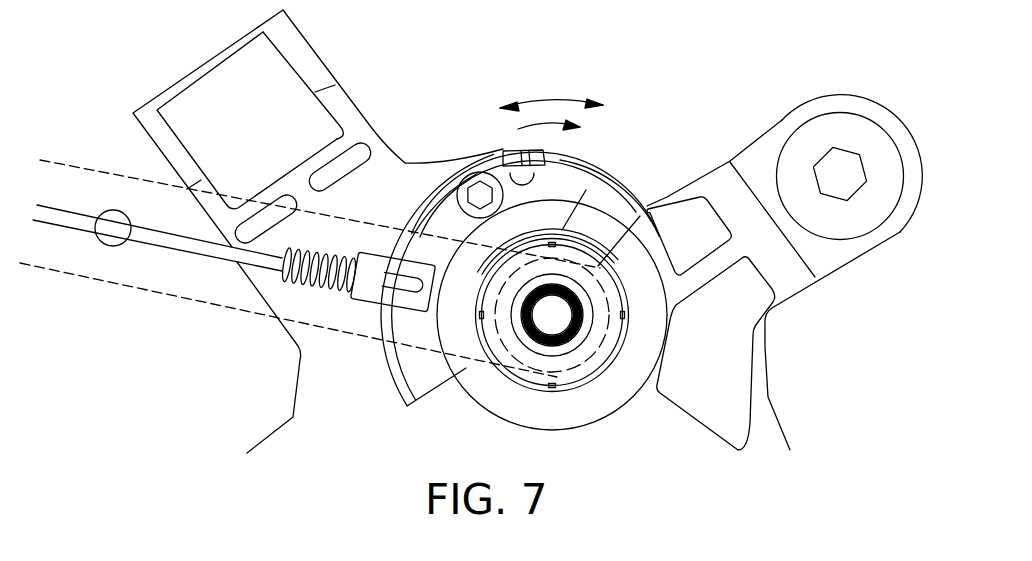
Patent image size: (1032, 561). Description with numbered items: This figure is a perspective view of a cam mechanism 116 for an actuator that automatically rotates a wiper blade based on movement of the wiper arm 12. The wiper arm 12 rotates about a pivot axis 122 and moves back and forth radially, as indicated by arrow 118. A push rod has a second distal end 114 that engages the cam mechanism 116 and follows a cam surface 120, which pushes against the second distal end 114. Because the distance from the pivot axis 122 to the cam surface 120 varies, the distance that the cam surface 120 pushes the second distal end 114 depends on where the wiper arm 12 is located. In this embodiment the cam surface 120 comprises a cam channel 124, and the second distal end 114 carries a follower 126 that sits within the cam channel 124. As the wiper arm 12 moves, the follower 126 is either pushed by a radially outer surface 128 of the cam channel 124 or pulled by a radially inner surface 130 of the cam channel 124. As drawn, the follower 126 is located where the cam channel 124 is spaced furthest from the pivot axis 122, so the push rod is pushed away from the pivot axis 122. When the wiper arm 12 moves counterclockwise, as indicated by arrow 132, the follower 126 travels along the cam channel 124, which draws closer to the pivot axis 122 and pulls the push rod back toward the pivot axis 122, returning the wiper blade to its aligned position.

The wiper arm 12 is at (152, 291).
The second distal end 114 is at (353, 292).
The cam mechanism 116 is at (602, 398).
The arrow 118 is at (552, 98).
The cam surface 120 is at (536, 194).
The pivot axis 122 is at (552, 318).
The cam channel 124 is at (425, 376).
The follower 126 is at (381, 322).
The radially outer surface 128 is at (595, 174).
The radially inner surface 130 is at (503, 165).
The arrow 132 is at (555, 132).